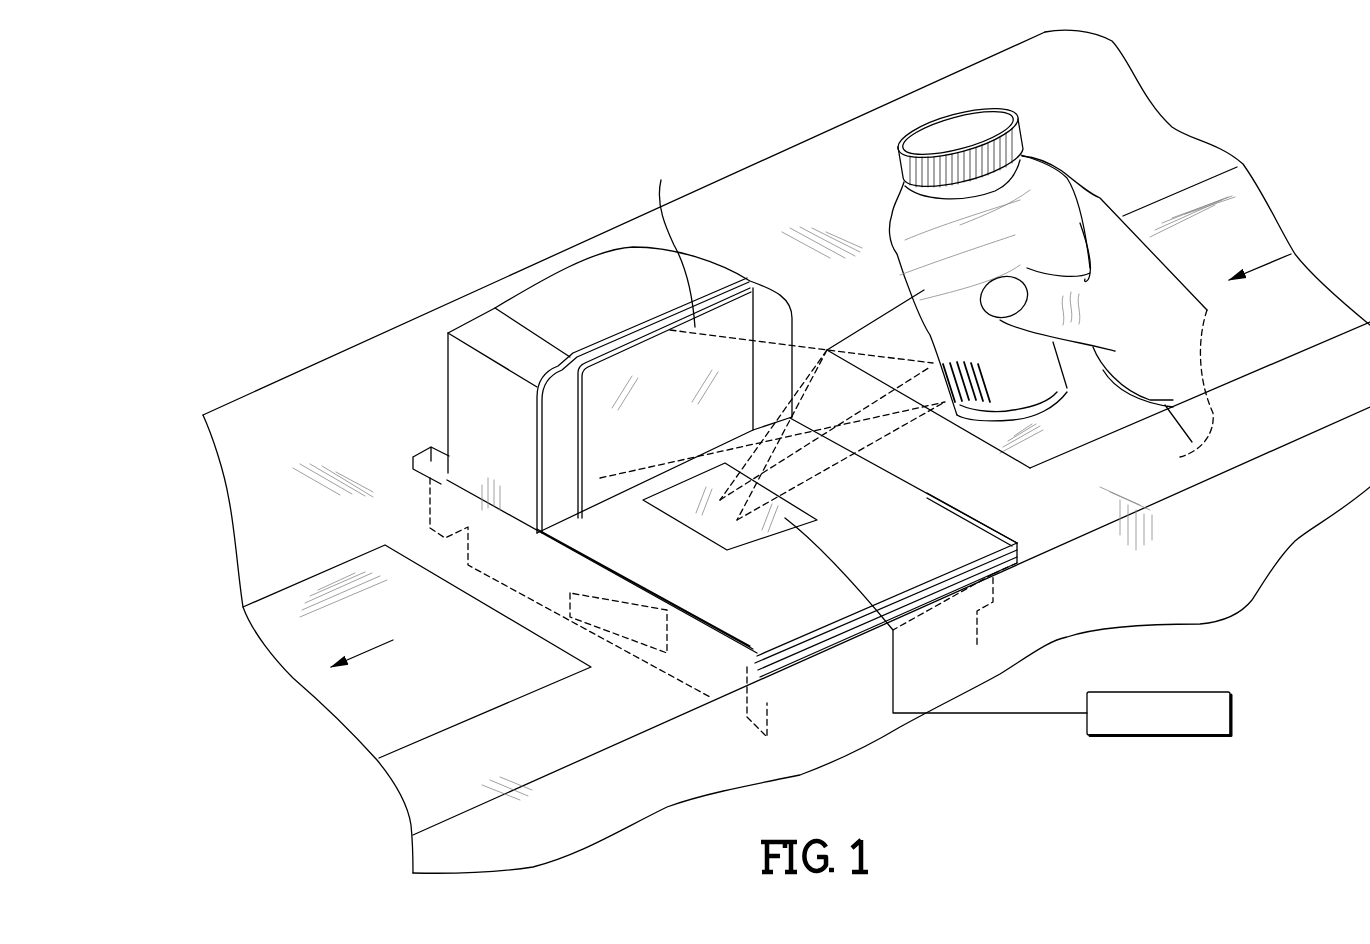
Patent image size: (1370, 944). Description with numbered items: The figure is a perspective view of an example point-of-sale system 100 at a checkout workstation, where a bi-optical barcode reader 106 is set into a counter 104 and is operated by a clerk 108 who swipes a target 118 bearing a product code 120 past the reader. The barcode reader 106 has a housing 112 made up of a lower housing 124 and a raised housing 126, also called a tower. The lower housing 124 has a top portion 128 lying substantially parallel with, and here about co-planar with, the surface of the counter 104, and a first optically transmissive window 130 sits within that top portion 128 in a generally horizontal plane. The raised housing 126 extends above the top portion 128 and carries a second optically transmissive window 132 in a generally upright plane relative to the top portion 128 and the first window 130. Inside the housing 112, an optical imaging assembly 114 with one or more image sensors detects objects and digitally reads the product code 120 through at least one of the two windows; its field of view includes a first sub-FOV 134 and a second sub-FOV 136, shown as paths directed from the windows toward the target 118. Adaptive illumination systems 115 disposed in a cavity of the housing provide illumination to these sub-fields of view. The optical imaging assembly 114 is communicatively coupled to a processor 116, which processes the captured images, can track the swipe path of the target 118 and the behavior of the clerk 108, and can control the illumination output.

The point-of-sale system 100 is at (266, 150).
The counter 104 is at (1107, 63).
The bi-optical barcode reader 106 is at (448, 421).
The clerk 108 is at (1173, 337).
The housing 112 is at (485, 385).
The optical imaging assembly 114 is at (600, 460).
The adaptive illumination systems 115 is at (933, 657).
The processor 116 is at (1232, 713).
The target 118 is at (1060, 213).
The product code 120 is at (987, 386).
The lower housing 124 is at (705, 726).
The raised housing 126 is at (530, 269).
The top portion 128 is at (732, 623).
The first optically transmissive window 130 is at (750, 536).
The second optically transmissive window 132 is at (636, 360).
The first sub-FOV 134 is at (800, 346).
The second sub-FOV 136 is at (907, 437).